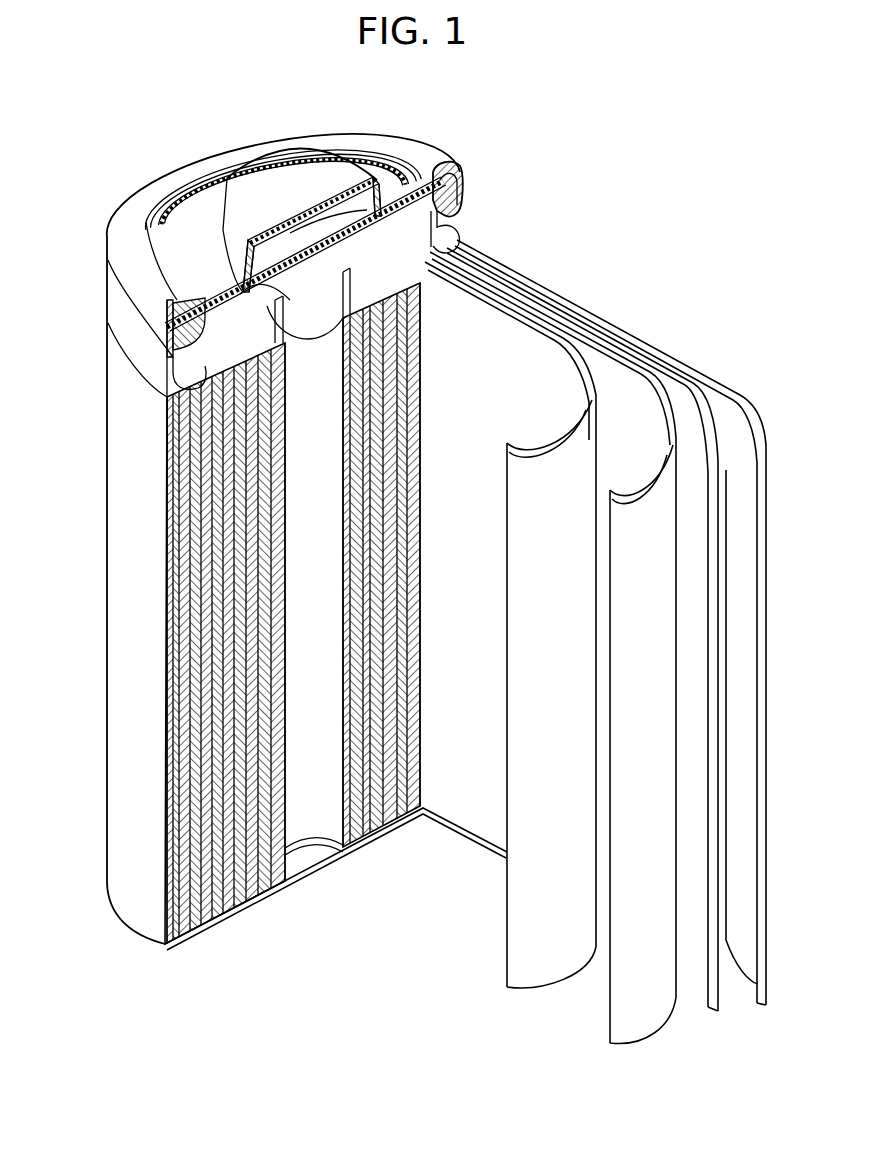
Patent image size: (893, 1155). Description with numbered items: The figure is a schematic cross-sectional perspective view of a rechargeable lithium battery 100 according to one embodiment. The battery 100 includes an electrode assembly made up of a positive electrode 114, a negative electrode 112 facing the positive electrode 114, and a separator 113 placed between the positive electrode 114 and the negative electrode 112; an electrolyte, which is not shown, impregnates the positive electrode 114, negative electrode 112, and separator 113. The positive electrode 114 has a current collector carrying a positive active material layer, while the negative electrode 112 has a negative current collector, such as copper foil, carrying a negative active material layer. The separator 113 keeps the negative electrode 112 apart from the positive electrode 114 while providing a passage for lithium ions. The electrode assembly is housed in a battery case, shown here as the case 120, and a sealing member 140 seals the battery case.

The rechargeable lithium battery 100 is at (494, 151).
The negative electrode 112 is at (743, 408).
The separator 113 is at (507, 311).
The positive electrode 114 is at (613, 370).
The case (can) 120 is at (132, 472).
The sealing member 140 is at (260, 200).